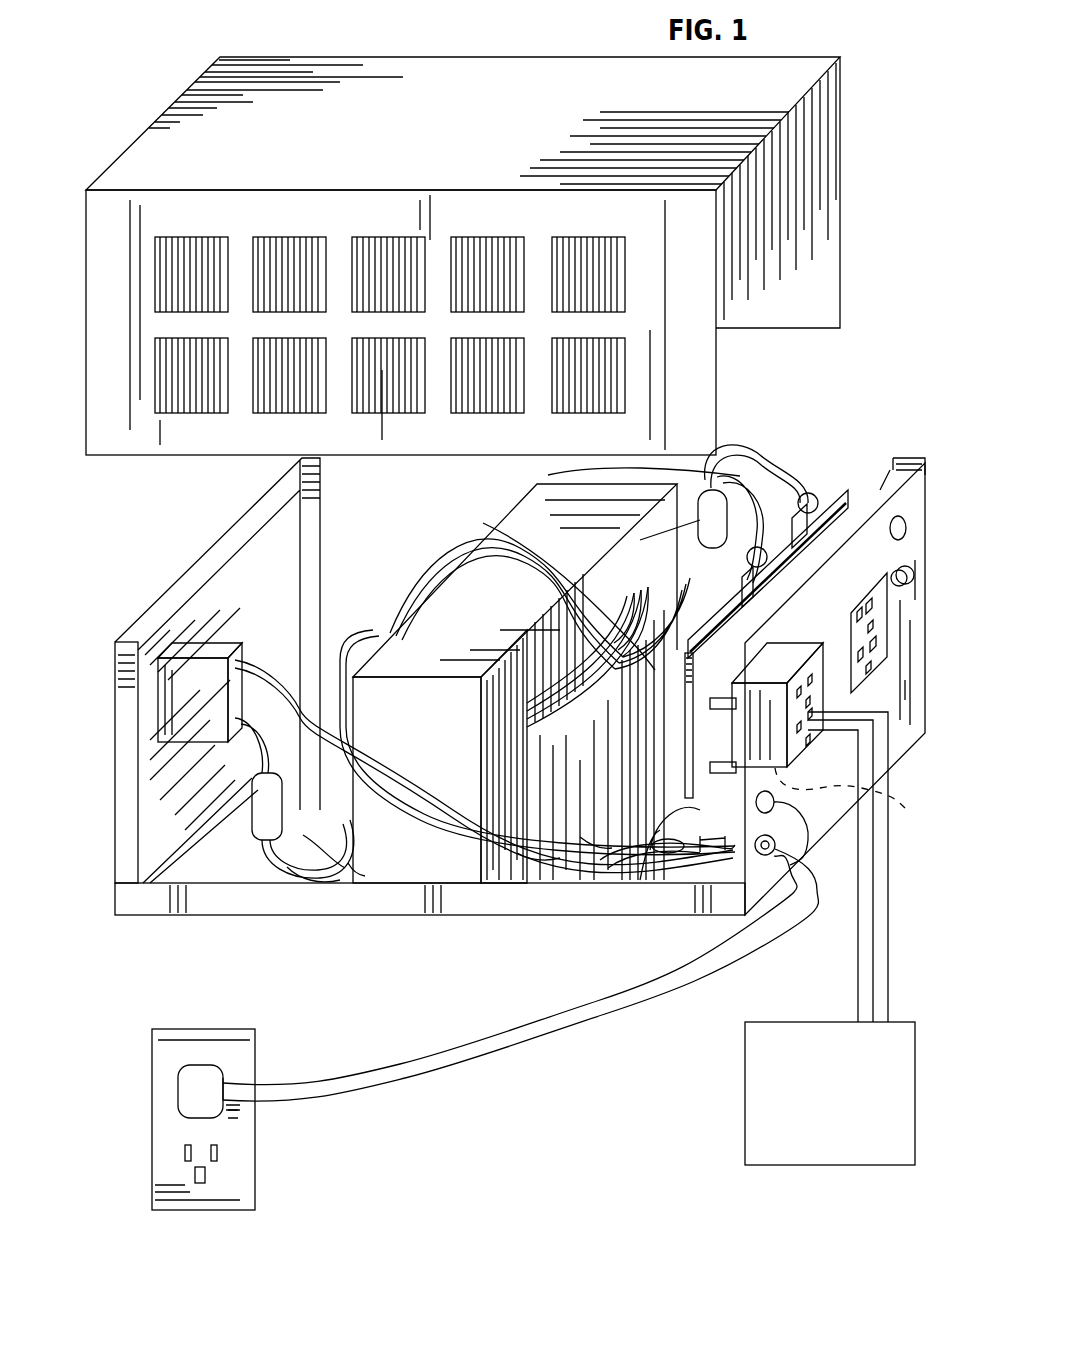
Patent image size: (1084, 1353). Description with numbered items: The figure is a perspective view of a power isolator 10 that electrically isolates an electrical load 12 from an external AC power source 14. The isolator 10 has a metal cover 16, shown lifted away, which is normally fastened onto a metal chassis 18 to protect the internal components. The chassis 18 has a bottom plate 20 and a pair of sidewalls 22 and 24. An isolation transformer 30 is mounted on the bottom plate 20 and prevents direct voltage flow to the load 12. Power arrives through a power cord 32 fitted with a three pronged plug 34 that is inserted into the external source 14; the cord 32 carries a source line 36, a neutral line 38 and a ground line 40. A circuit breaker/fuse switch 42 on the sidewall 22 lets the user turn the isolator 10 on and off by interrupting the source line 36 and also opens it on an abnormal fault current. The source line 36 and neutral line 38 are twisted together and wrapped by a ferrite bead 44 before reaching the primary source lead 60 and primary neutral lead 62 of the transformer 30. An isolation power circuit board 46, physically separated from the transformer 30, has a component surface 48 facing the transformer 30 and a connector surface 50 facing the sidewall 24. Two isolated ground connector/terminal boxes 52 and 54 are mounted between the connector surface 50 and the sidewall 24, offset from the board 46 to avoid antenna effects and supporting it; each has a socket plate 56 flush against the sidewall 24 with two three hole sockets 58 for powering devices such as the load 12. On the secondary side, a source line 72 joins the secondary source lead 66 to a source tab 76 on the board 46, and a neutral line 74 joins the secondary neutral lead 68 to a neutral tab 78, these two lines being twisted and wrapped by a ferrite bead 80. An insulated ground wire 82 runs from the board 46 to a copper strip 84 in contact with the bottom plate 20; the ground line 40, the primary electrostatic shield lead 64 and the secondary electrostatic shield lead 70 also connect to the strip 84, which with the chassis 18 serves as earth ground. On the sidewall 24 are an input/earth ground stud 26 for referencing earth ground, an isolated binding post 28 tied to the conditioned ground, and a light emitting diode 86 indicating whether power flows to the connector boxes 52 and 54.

The power isolator 10 is at (161, 82).
The electrical load 12 is at (745, 1110).
The external AC power source 14 is at (248, 1155).
The metal cover 16 is at (832, 237).
The metal chassis 18 is at (903, 735).
The bottom plate 20 is at (240, 872).
The sidewall 22 is at (270, 540).
The sidewall 24 is at (897, 600).
The input/earth ground stud 26 is at (775, 853).
The isolated binding post 28 is at (910, 565).
The isolation transformer 30 is at (450, 880).
The power cord 32 is at (522, 1032).
The three pronged plug 34 is at (235, 1078).
The source line 36 is at (287, 867).
The neutral line 38 is at (303, 835).
The ground line 40 is at (732, 853).
The circuit breaker/fuse switch 42 is at (180, 675).
The ferrite bead 44 is at (255, 830).
The isolation power circuit board 46 is at (782, 527).
The component surface 48 is at (818, 482).
The connector surface 50 is at (790, 838).
The isolated ground connector/terminal box 52 is at (858, 867).
The isolated ground connector/terminal box 54 is at (908, 638).
The socket plate 56 is at (872, 623).
The three hole socket 58 is at (875, 604).
The primary source lead 60 is at (348, 863).
The primary neutral lead 62 is at (375, 632).
The primary electrostatic shield lead 64 is at (521, 723).
The secondary source lead 66 is at (488, 565).
The secondary neutral lead 68 is at (554, 589).
The secondary electrostatic shield lead 70 is at (653, 833).
The source line 72 is at (629, 477).
The neutral line 74 is at (735, 470).
The source tab 76 is at (818, 498).
The neutral tab 78 is at (870, 672).
The ferrite bead 80 is at (700, 512).
The insulated ground wire 82 is at (693, 850).
The copper strip 84 is at (620, 850).
The light emitting diode 86 is at (880, 480).